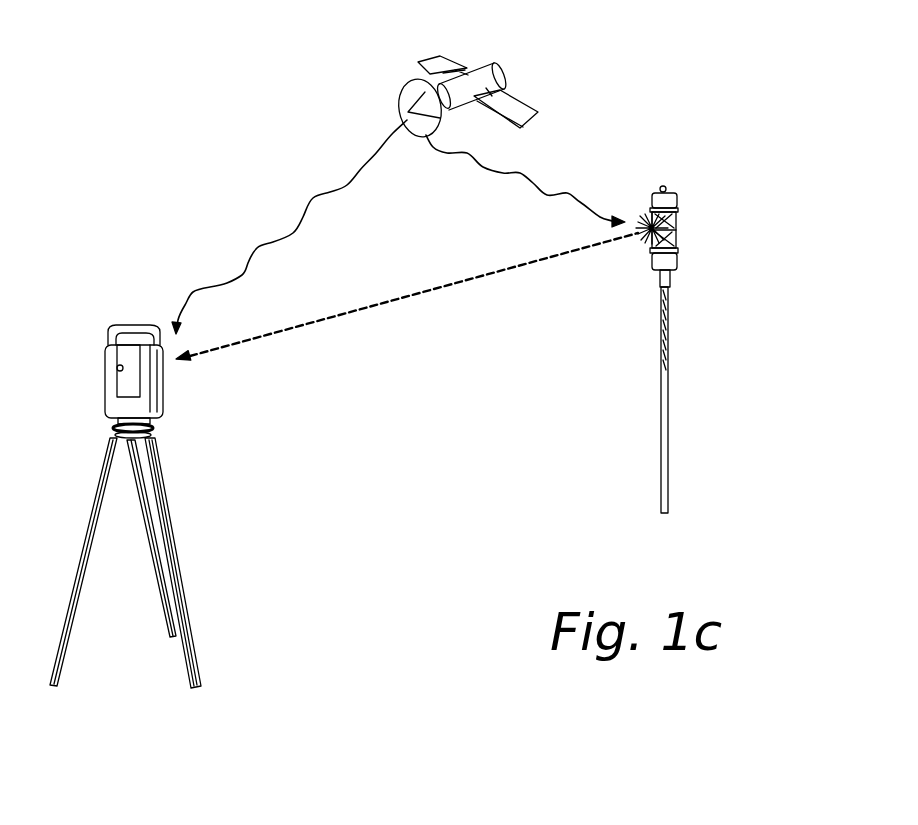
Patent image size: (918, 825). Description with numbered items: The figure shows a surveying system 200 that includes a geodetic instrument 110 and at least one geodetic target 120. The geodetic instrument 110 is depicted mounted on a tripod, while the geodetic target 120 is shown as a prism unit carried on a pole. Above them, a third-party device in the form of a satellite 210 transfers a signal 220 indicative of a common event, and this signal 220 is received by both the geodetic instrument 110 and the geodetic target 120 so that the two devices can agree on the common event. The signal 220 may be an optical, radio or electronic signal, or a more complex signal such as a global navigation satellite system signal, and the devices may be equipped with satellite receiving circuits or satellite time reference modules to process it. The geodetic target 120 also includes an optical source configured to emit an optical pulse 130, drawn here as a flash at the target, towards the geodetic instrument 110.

The surveying system 200 is at (136, 98).
The satellite 210 is at (503, 64).
The signal 220 is at (347, 187).
The geodetic instrument 110 is at (155, 405).
The geodetic target 120 is at (662, 258).
The optical pulse 130 is at (642, 239).